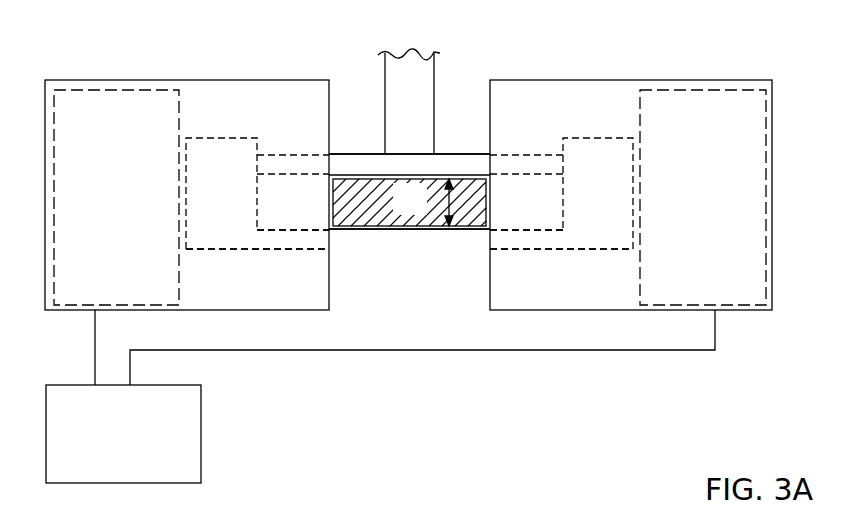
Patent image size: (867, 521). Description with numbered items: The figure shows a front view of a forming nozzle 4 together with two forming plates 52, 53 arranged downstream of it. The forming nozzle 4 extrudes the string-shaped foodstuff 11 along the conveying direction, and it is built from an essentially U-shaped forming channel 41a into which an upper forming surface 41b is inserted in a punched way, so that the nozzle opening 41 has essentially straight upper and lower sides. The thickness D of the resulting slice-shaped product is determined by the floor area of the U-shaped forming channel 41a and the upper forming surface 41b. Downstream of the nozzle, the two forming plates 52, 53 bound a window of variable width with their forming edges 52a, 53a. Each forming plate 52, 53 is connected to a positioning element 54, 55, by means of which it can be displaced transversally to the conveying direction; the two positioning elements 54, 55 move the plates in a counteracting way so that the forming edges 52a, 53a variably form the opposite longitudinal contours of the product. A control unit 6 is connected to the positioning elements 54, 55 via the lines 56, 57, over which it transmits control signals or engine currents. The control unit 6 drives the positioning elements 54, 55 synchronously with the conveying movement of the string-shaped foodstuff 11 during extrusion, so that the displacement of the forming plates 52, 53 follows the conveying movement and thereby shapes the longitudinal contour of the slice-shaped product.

The forming nozzle 4 is at (413, 48).
The control unit 6 is at (130, 446).
The string-shaped foodstuff 11 is at (421, 212).
The nozzle opening 41 is at (460, 142).
The U-shaped forming channel 41a is at (386, 232).
The upper forming surface 41b is at (362, 163).
The forming plate 52 is at (226, 97).
The forming edge 52a is at (318, 193).
The forming plate 53 is at (573, 107).
The forming edge 53a is at (493, 193).
The positioning element 54 is at (127, 208).
The positioning element 55 is at (715, 208).
The line 56 is at (95, 345).
The line 57 is at (310, 350).
The thickness D is at (463, 205).